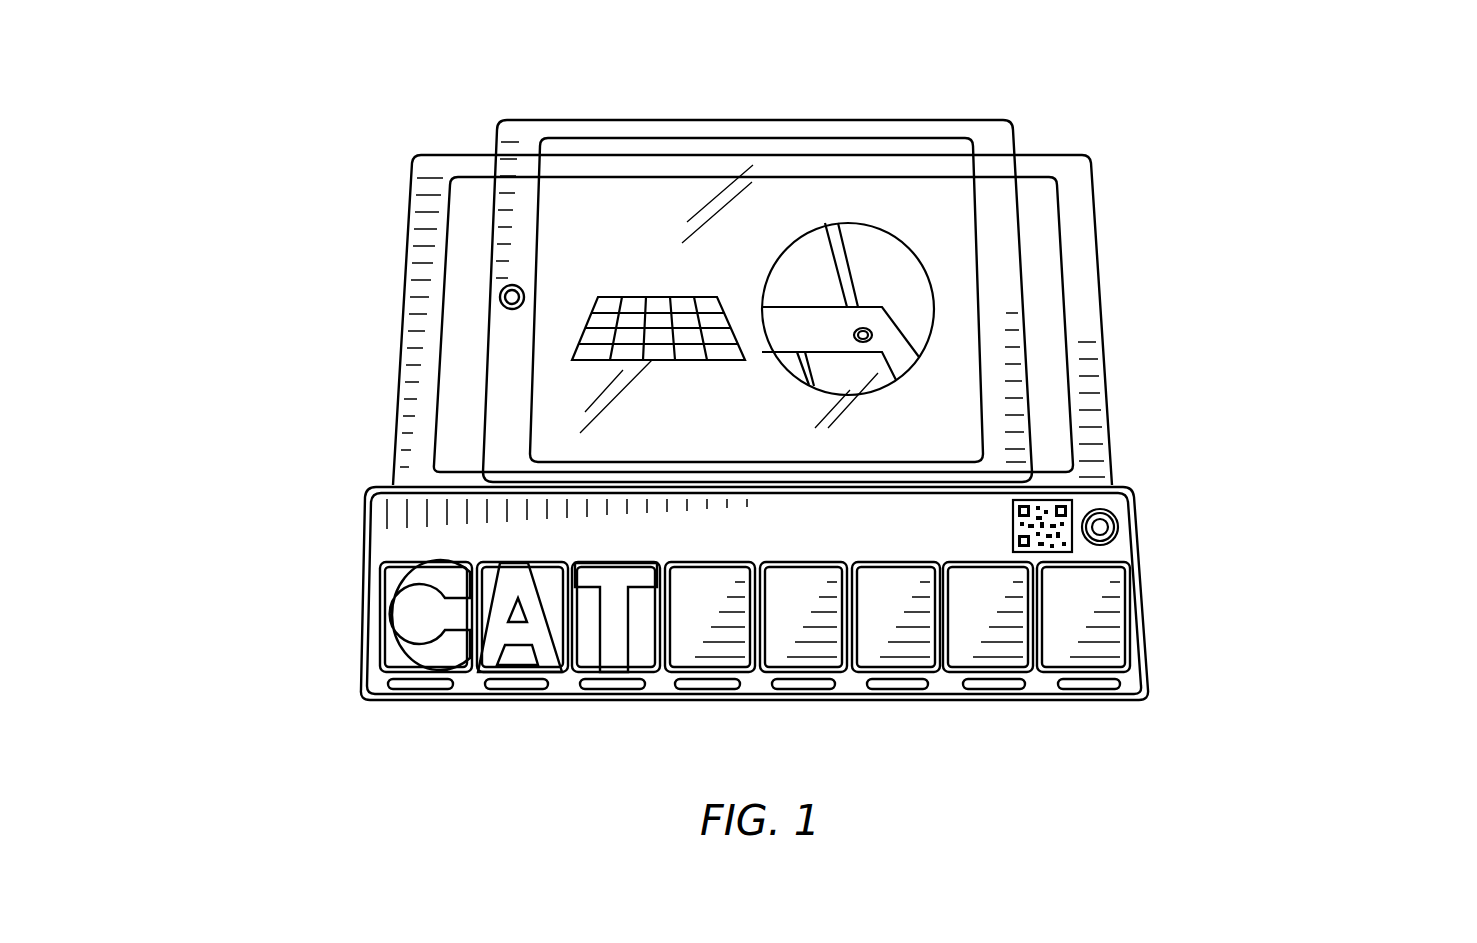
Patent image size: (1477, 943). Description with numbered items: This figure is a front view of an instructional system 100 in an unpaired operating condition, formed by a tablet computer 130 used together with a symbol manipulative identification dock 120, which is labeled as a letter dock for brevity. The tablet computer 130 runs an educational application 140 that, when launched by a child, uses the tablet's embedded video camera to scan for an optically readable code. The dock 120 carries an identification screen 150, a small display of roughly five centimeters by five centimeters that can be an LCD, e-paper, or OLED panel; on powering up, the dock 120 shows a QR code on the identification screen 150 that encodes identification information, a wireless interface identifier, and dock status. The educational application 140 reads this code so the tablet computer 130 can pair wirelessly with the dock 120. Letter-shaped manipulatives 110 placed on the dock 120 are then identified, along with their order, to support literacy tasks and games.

The instructional system 100 is at (428, 72).
The letter manipulatives 110 is at (395, 612).
The symbol manipulative identification dock 120 is at (379, 492).
The tablet computer 130 is at (488, 262).
The educational application 140 is at (907, 285).
The identification screen 150 is at (1075, 512).